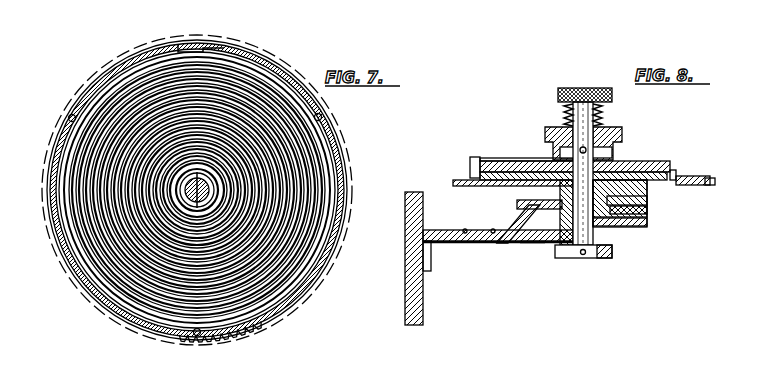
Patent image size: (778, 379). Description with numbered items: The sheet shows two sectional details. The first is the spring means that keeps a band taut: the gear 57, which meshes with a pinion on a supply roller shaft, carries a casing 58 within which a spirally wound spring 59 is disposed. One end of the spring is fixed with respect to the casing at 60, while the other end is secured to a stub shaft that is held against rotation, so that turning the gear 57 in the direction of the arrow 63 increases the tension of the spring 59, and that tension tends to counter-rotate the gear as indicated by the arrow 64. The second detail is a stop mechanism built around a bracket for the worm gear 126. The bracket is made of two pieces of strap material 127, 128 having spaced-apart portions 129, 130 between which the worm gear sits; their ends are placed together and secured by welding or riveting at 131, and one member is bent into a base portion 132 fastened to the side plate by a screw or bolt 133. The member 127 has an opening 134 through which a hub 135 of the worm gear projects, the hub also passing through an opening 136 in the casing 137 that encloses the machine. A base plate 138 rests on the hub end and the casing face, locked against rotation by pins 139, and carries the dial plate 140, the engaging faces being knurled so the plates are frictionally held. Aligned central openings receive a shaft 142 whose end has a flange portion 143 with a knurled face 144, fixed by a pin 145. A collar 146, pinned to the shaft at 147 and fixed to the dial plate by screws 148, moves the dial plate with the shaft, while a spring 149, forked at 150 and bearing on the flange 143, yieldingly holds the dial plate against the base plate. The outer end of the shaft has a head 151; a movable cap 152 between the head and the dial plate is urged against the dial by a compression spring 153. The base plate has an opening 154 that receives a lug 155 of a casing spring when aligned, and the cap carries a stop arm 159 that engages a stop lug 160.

In FIG. 7, the gear 57 is at (230, 342).
In FIG. 7, the casing 58 is at (122, 321).
In FIG. 7, the spirally wound spring 59 is at (78, 251).
In FIG. 7, the fixed end of spring 60 is at (215, 46).
In FIG. 7, the arrow 63 is at (244, 31).
In FIG. 7, the arrow 64 is at (132, 34).
In FIG. 8, the worm gear 126 is at (716, 212).
In FIG. 8, the strap member 127 is at (505, 218).
In FIG. 8, the strap member 128 is at (523, 245).
In FIG. 8, the spaced-apart portion 129 is at (648, 200).
In FIG. 8, the spaced-apart portion 130 is at (648, 224).
In FIG. 8, the rivets 131 is at (466, 230).
In FIG. 8, the base portion 132 is at (431, 268).
In FIG. 8, the screw or bolt 133 is at (428, 258).
In FIG. 8, the opening 134 is at (560, 196).
In FIG. 8, the hub 135 is at (647, 209).
In FIG. 8, the opening 136 is at (713, 186).
In FIG. 8, the casing 137 is at (714, 182).
In FIG. 8, the base plate 138 is at (478, 178).
In FIG. 8, the pins 139 is at (540, 172).
In FIG. 8, the dial plate 140 is at (500, 161).
In FIG. 8, the shaft 142 is at (600, 247).
In FIG. 8, the flange portion 143 is at (562, 259).
In FIG. 8, the knurled face 144 is at (597, 257).
In FIG. 8, the pin 145 is at (584, 256).
In FIG. 8, the collar 146 is at (617, 136).
In FIG. 8, the pin 147 is at (565, 150).
In FIG. 8, the screws 148 is at (614, 153).
In FIG. 8, the spring 149 is at (533, 244).
In FIG. 8, the fork 150 is at (596, 240).
In FIG. 8, the head 151 is at (558, 92).
In FIG. 8, the movable cap 152 is at (603, 120).
In FIG. 8, the compression spring 153 is at (602, 108).
In FIG. 8, the opening 154 is at (674, 170).
In FIG. 8, the lug 155 is at (690, 176).
In FIG. 8, the stop arm 159 is at (492, 159).
In FIG. 8, the stop lug 160 is at (472, 162).